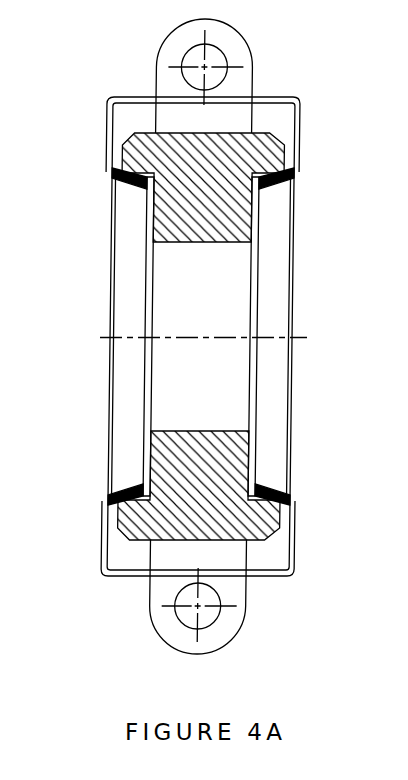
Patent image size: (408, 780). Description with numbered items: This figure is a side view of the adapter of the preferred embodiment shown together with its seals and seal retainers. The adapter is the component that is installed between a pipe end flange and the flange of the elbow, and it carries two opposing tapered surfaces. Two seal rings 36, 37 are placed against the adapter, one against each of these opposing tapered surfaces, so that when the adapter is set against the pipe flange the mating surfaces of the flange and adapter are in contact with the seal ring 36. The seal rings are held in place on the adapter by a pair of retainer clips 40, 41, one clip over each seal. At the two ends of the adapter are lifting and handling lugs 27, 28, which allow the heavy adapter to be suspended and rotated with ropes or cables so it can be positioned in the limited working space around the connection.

The lifting and handling lug 27 is at (252, 47).
The lifting and handling lug 28 is at (233, 640).
The seal ring 36 is at (110, 282).
The seal ring 37 is at (290, 383).
The retainer clip 40 is at (302, 125).
The retainer clip 41 is at (294, 543).